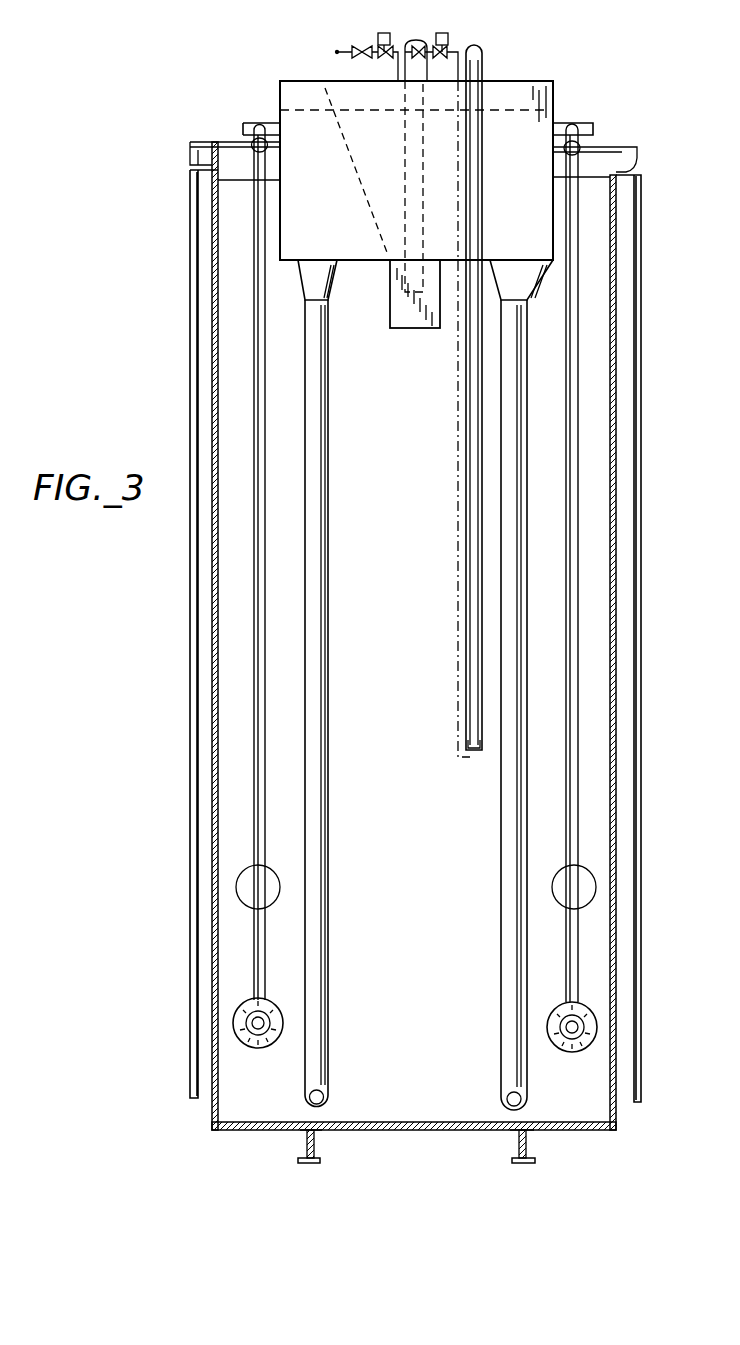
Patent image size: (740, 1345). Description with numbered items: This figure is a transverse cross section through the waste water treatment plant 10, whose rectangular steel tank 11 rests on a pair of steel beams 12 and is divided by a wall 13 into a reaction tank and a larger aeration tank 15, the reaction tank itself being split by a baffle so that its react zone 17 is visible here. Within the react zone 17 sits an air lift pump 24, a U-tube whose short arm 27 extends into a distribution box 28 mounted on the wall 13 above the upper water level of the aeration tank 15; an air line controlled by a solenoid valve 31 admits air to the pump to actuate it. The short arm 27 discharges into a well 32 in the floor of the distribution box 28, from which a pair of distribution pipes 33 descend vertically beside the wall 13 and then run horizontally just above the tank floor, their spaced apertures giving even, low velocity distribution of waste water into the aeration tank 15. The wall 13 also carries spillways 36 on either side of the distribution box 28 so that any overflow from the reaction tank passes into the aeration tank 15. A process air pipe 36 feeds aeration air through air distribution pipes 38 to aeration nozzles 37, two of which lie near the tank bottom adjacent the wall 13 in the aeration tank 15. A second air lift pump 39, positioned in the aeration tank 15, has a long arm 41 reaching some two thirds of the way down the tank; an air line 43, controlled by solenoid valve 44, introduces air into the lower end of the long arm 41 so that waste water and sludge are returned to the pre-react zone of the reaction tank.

The waste water treatment plant 10 is at (645, 660).
The rectangular steel tank 11 is at (212, 757).
The steel beams 12 is at (318, 1150).
The wall 13 is at (377, 456).
The aeration tank 15 is at (596, 838).
The react zone 17 is at (596, 480).
The air lift pump 24 is at (540, 90).
The short arm 27 is at (408, 70).
The distribution box 28 is at (290, 93).
The solenoid valve 31 is at (383, 33).
The well 32 is at (400, 330).
The distribution pipes 33 is at (315, 800).
The process air pipe 36 is at (250, 142).
The aeration nozzles 37 is at (250, 1046).
The air distribution pipes 38 is at (266, 928).
The second air lift pump 39 is at (486, 56).
The long arm 41 is at (470, 470).
The air line 43 is at (457, 568).
The solenoid valve 44 is at (443, 33).